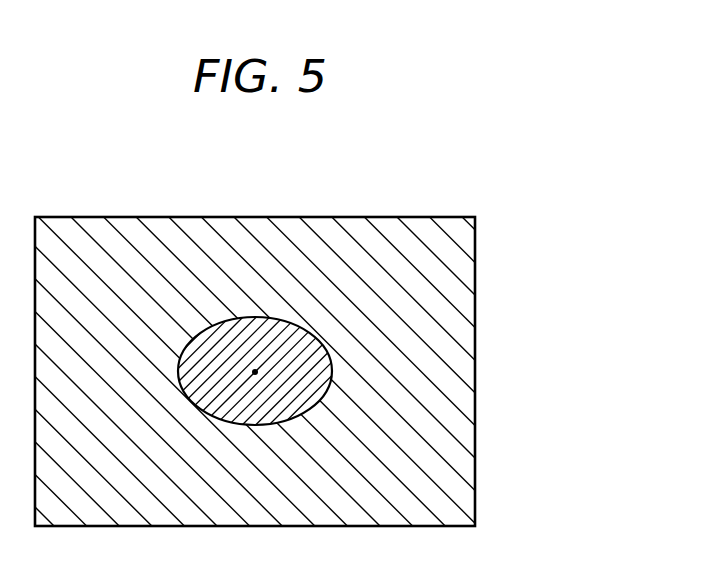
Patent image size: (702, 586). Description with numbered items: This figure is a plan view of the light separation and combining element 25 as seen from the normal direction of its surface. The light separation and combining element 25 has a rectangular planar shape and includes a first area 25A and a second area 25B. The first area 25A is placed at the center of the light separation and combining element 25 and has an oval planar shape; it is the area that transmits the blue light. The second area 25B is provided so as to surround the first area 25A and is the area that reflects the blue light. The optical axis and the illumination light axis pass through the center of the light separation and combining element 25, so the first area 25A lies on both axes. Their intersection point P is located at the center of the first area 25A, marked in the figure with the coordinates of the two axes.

The light separation and combining element 25 is at (450, 206).
The first area 25A is at (320, 365).
The second area 25B is at (460, 274).
The intersection point P is at (255, 372).